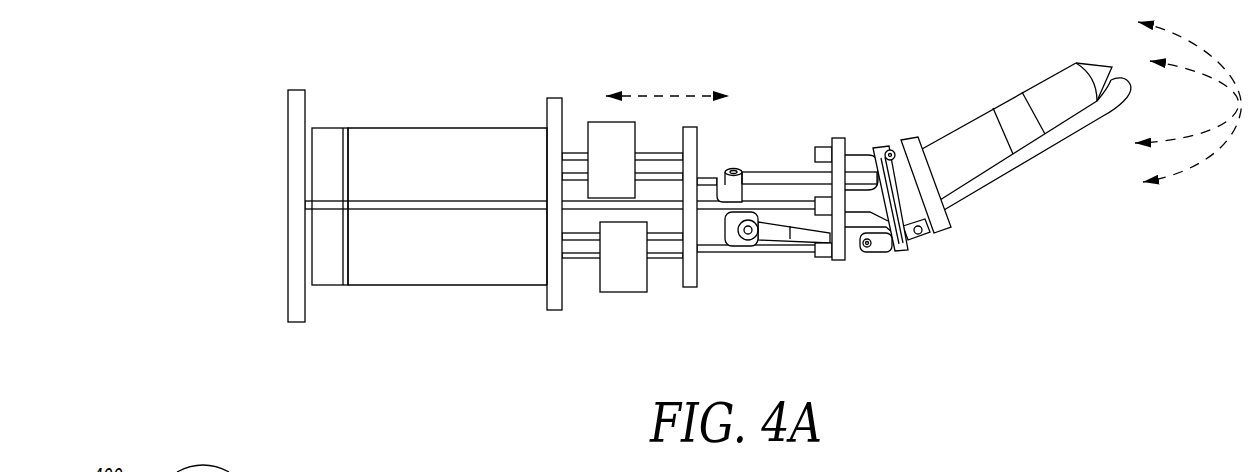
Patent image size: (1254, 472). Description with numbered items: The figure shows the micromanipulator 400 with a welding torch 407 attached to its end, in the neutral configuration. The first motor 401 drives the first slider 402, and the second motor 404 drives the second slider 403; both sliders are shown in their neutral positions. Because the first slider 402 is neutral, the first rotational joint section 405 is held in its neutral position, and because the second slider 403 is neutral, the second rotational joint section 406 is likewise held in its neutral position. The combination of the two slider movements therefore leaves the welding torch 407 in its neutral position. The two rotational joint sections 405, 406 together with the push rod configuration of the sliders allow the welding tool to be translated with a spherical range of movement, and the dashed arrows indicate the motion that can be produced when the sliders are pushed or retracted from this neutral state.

The micromanipulator 400 is at (255, 74).
The first motor 401 is at (423, 177).
The first slider 402 is at (607, 147).
The second slider 403 is at (621, 262).
The second motor 404 is at (423, 235).
The first rotational joint section 405 is at (885, 254).
The second rotational joint section 406 is at (889, 150).
The welding torch 407 is at (953, 122).